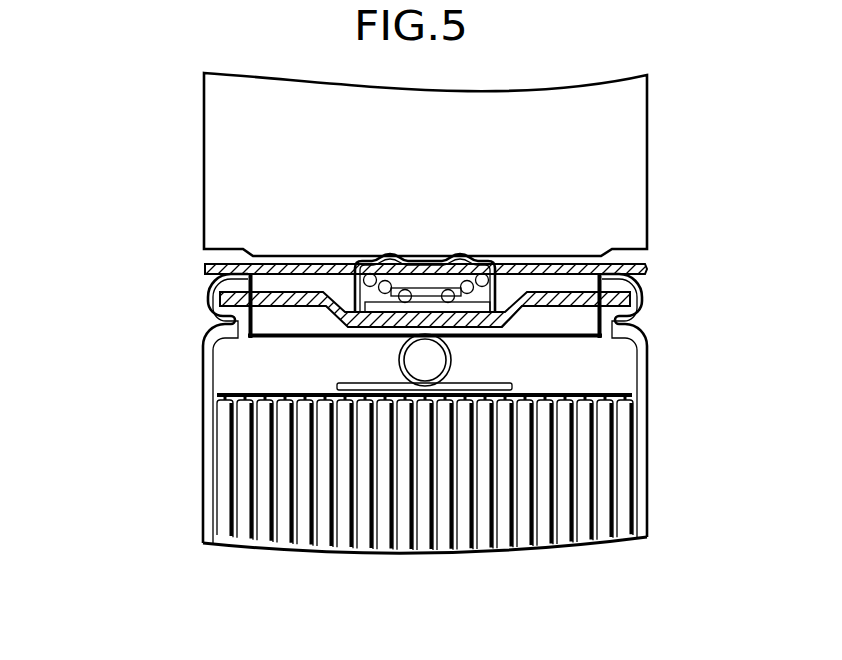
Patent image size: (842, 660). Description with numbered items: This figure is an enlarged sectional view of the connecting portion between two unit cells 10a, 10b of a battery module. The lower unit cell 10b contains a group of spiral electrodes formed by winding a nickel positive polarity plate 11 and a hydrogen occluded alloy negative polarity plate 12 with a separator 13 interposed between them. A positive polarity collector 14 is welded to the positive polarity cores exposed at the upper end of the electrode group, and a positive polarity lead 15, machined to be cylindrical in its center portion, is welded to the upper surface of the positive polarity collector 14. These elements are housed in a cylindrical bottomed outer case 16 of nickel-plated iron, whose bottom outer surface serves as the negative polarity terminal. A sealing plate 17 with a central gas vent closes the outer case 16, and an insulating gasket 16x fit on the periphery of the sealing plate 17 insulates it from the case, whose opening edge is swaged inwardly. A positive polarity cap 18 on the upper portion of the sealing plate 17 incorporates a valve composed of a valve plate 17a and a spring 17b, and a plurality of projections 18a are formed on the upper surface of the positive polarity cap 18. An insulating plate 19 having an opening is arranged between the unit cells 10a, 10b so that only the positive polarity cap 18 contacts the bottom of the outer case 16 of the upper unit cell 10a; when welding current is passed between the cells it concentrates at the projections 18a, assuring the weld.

The unit cell 10a is at (182, 193).
The unit cell 10b is at (182, 443).
The nickel positive polarity plate 11 is at (602, 457).
The negative polarity plate 12 is at (620, 483).
The separator 13 is at (608, 515).
The positive polarity collector 14 is at (622, 390).
The positive polarity lead 15 is at (452, 357).
The outer case 16 is at (630, 207).
The insulating gasket 16x is at (212, 307).
The sealing plate 17 is at (215, 288).
The valve plate 17a is at (373, 330).
The spring 17b is at (420, 262).
The positive polarity cap 18 is at (480, 262).
The projections 18a is at (460, 256).
The insulating plate 19 is at (648, 268).